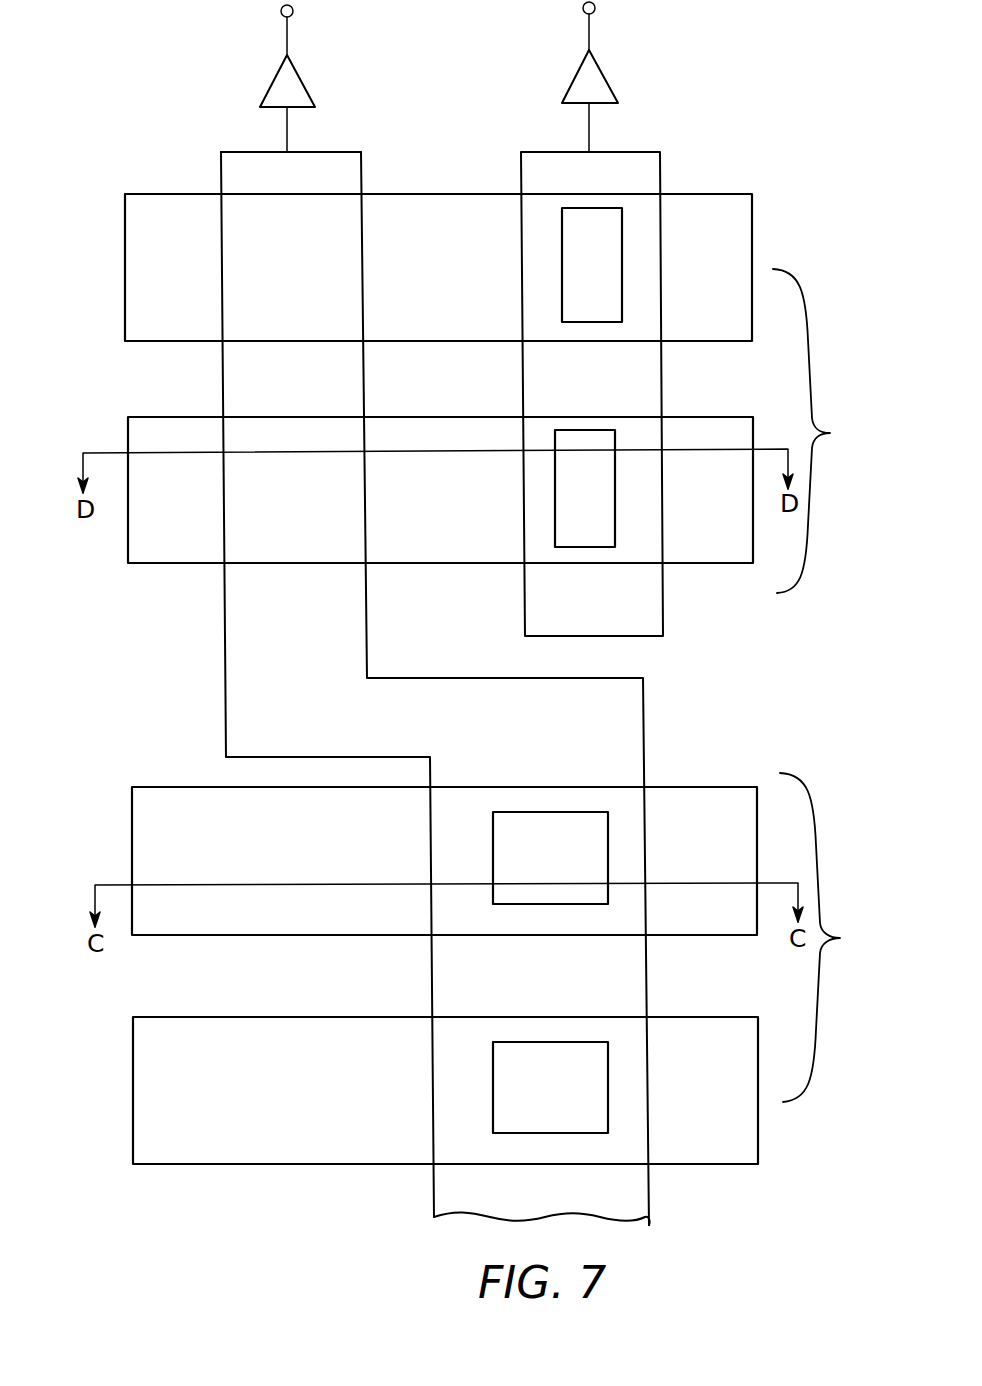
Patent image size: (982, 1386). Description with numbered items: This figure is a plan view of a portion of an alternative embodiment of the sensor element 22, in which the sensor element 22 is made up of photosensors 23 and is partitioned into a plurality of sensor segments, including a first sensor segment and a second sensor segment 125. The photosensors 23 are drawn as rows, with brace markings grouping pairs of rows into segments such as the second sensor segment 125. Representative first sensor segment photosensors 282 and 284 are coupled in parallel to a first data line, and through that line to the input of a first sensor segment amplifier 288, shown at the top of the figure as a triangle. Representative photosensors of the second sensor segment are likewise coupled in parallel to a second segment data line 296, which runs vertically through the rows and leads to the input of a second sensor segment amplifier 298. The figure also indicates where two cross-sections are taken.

The sensor element 22 is at (212, 698).
The photosensors 23 is at (690, 194).
The second sensor segment 125 is at (834, 685).
The first sensor segment photosensor 282 is at (240, 1088).
The first sensor segment photosensor 284 is at (239, 858).
The first sensor segment amplifier 288 is at (276, 70).
The second segment data line 296 is at (545, 152).
The second sensor segment amplifier 298 is at (600, 68).